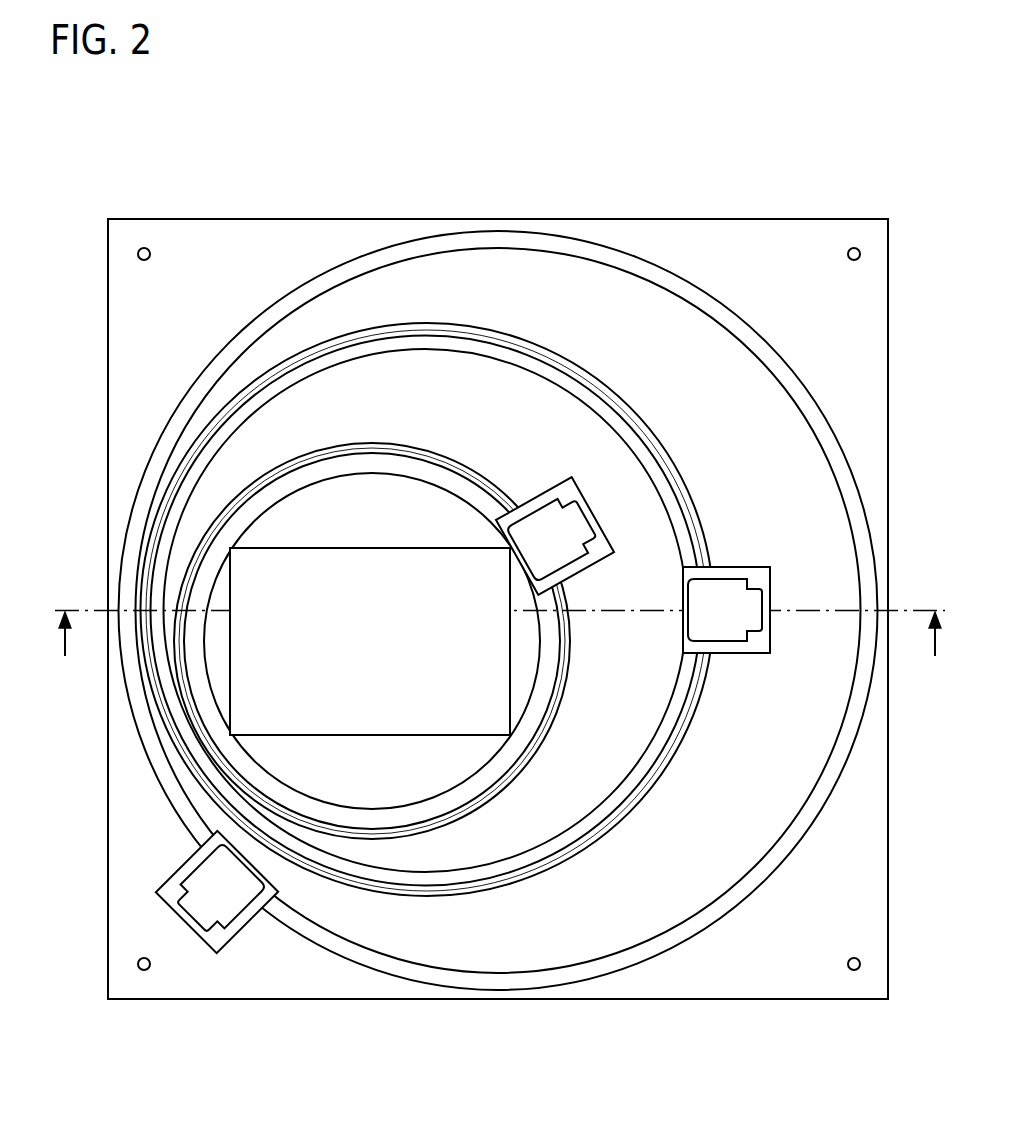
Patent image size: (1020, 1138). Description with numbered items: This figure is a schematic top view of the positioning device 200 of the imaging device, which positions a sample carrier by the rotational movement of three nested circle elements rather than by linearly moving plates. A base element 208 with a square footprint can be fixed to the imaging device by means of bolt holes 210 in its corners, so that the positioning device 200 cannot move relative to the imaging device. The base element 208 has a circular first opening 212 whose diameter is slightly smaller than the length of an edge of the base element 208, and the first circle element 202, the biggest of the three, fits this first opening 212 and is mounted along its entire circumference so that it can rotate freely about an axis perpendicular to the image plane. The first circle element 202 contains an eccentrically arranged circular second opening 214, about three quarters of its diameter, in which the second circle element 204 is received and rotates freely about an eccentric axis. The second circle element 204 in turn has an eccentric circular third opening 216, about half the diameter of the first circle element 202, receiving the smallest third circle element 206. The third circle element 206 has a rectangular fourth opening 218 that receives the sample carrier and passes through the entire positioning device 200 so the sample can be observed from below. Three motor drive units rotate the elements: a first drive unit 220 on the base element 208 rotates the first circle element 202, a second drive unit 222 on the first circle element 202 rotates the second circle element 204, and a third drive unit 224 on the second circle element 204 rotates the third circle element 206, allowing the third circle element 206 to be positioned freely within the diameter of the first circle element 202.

The positioning device 200 is at (660, 131).
The first circle element 202 is at (555, 264).
The second circle element 204 is at (476, 374).
The third circle element 206 is at (369, 485).
The base element 208 is at (764, 237).
The bolt holes 210 is at (143, 249).
The first opening 212 is at (436, 244).
The second opening 214 is at (573, 384).
The third opening 216 is at (462, 484).
The fourth opening 218 is at (361, 722).
The first drive unit 220 is at (220, 933).
The second drive unit 222 is at (751, 576).
The third drive unit 224 is at (565, 494).